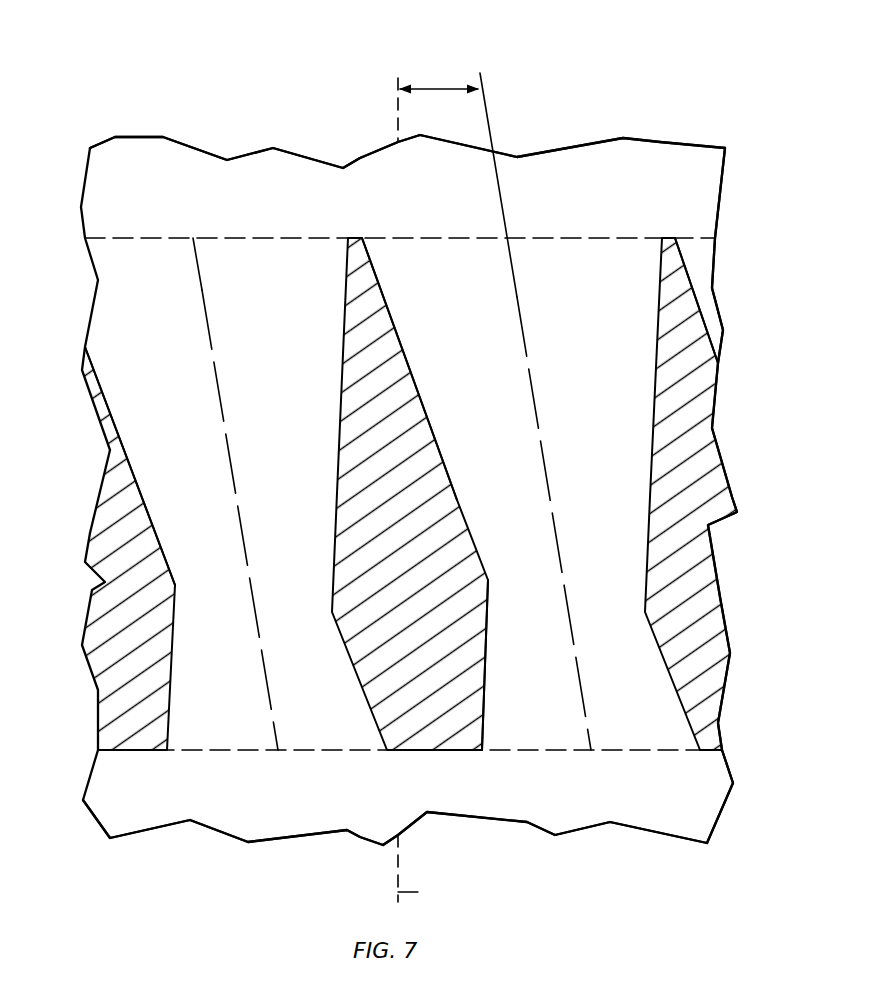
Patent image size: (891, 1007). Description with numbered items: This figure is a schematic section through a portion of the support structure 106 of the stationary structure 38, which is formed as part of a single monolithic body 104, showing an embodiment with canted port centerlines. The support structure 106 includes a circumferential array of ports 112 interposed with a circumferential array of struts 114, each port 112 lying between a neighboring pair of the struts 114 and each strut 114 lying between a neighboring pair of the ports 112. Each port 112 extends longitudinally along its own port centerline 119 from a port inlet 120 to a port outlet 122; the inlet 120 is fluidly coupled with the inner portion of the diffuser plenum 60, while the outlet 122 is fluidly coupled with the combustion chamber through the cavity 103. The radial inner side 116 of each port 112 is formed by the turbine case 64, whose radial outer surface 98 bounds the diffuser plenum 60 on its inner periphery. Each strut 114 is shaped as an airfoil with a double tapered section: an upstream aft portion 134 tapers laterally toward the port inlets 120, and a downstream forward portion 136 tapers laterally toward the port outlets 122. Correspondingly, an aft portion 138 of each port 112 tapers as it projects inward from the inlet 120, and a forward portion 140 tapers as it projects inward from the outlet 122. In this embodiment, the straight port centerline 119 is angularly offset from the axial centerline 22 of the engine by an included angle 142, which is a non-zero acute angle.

The axial centerline 22 is at (418, 892).
The stationary structure 38 is at (712, 121).
The monolithic body 104 is at (439, 444).
The diffuser plenum 60 is at (262, 178).
The turbine case 64 is at (702, 175).
The radial outer surface 98 is at (710, 198).
The cavity 103 is at (307, 816).
The support structure 106 is at (744, 533).
The ports 112 is at (273, 468).
The struts 114 is at (113, 644).
The radial inner side 116 is at (135, 372).
The port centerline 119 is at (212, 353).
The port inlet 120 is at (145, 230).
The port outlet 122 is at (210, 760).
The aft portion of strut 134 is at (424, 382).
The forward portion of strut 136 is at (496, 680).
The aft portion of port 138 is at (290, 283).
The forward portion of port 140 is at (316, 729).
The included angle 142 is at (440, 88).